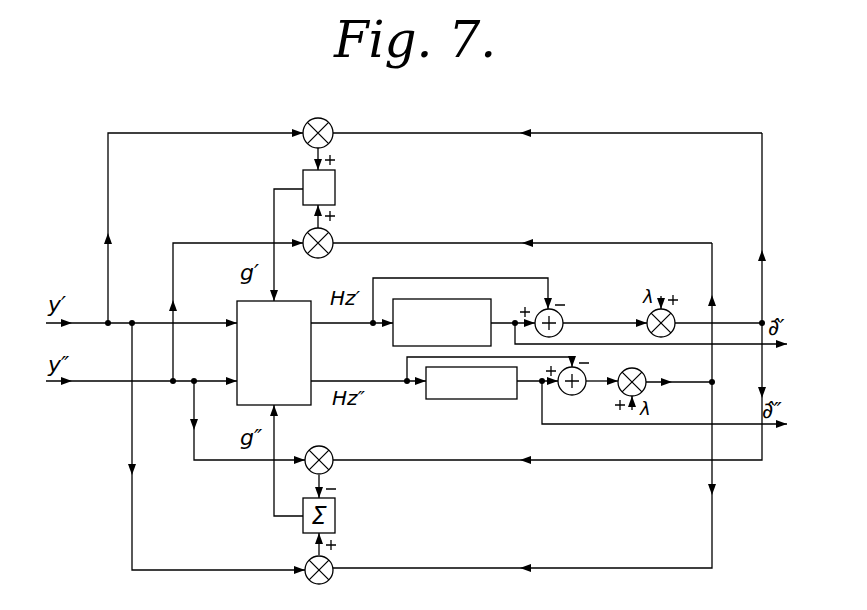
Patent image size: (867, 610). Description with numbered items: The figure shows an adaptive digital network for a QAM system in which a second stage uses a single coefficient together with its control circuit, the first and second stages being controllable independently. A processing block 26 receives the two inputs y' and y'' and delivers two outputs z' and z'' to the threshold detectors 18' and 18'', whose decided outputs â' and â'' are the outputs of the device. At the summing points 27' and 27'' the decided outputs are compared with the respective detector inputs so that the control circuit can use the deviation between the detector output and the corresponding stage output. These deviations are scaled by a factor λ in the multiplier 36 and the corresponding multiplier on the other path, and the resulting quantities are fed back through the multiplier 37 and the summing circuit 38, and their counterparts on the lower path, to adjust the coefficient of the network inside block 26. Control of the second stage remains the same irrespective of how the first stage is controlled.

The multiplier 37 is at (310, 123).
The summing circuit 38 is at (335, 188).
The signal processing unit 26 is at (252, 360).
The threshold detector 18' is at (442, 298).
The threshold detector 18'' is at (471, 401).
The summing circuit 27' is at (582, 314).
The summing circuit 27'' is at (539, 406).
The multiplier 36 is at (672, 318).